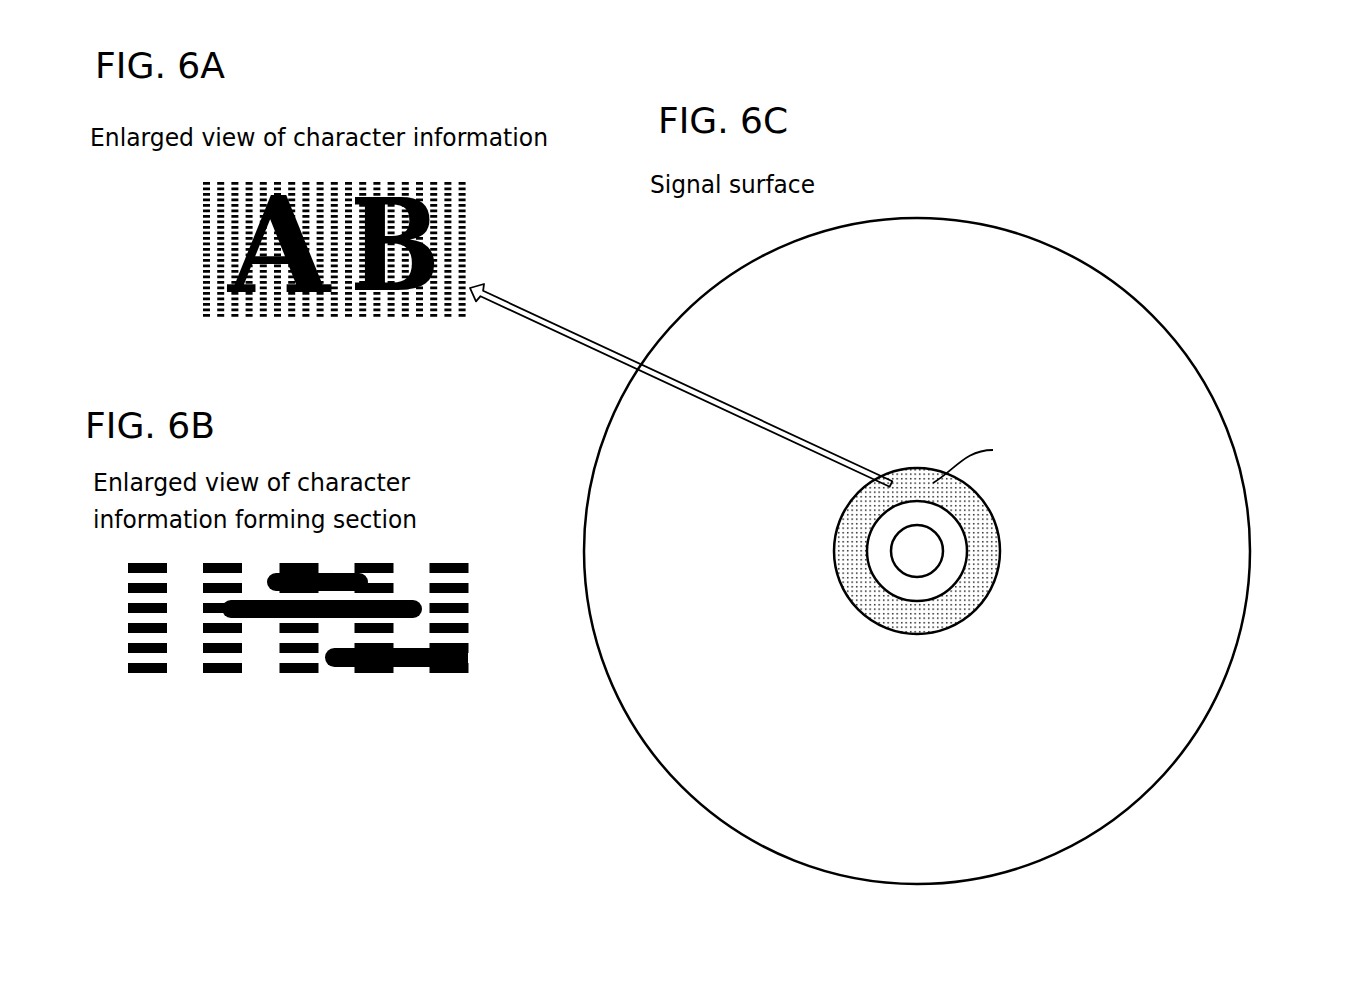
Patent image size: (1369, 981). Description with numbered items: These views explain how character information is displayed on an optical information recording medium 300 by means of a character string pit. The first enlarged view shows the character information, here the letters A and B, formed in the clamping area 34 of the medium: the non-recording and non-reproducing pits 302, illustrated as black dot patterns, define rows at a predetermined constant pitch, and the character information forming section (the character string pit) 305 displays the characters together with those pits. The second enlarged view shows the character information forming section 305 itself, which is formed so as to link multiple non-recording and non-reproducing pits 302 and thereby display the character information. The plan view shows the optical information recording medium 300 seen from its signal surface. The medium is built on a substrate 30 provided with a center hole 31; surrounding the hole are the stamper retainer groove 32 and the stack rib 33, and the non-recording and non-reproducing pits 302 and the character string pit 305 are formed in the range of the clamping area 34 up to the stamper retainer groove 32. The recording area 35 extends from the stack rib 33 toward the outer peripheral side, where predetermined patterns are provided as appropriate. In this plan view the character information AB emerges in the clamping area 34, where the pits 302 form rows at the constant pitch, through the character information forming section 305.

In FIG. 6C, the substrate 30 is at (1140, 798).
In FIG. 6C, the center hole 31 is at (917, 555).
In FIG. 6C, the stamper retainer groove 32 is at (938, 600).
In FIG. 6C, the stack rib 33 is at (993, 590).
In FIG. 6C, the clamping area 34 is at (853, 575).
In FIG. 6C, the recording area 35 is at (918, 494).
In FIG. 6C, the optical information recording medium 300 is at (895, 494).
In FIG. 6A, the non-recording and non-reproducing pit 302 is at (224, 300).
In FIG. 6B, the non-recording and non-reproducing pit 302 is at (148, 673).
In FIG. 6B, the character information forming section (character string pit) 305 is at (267, 618).